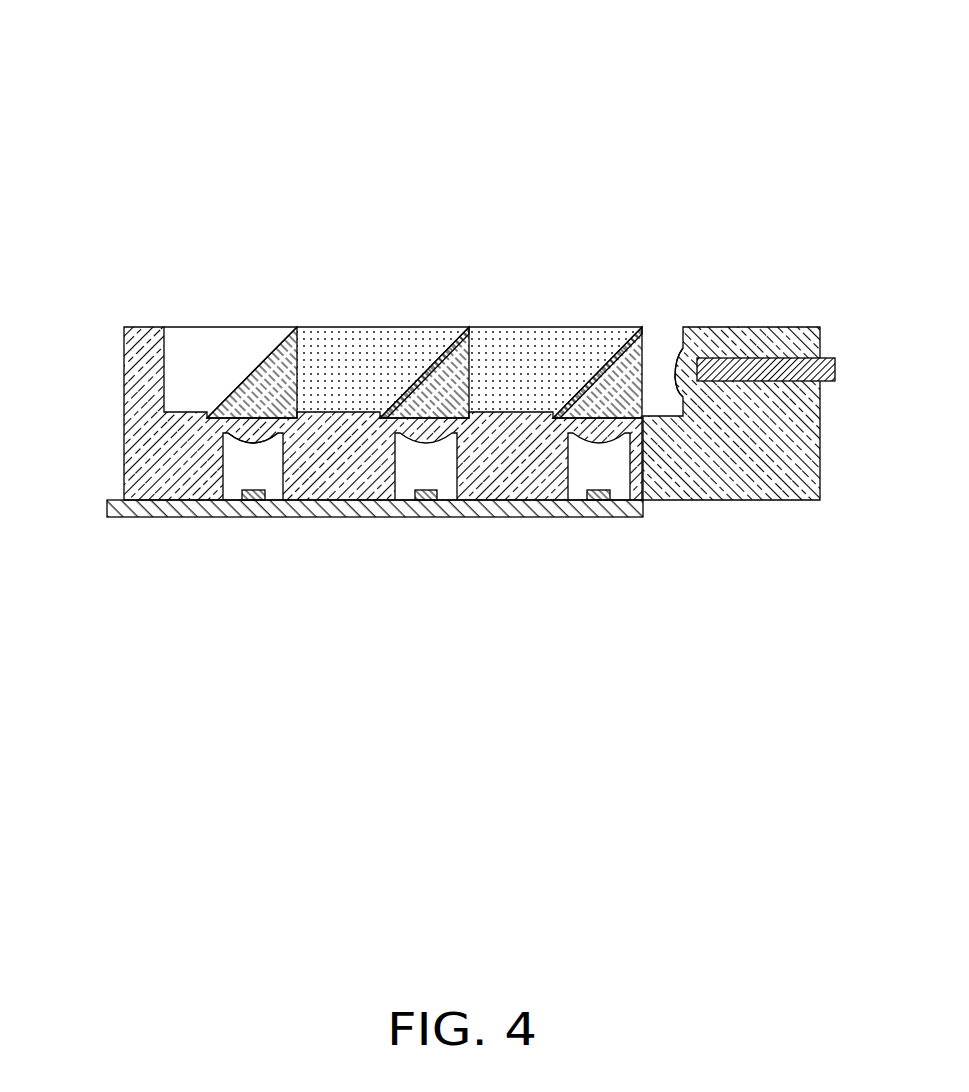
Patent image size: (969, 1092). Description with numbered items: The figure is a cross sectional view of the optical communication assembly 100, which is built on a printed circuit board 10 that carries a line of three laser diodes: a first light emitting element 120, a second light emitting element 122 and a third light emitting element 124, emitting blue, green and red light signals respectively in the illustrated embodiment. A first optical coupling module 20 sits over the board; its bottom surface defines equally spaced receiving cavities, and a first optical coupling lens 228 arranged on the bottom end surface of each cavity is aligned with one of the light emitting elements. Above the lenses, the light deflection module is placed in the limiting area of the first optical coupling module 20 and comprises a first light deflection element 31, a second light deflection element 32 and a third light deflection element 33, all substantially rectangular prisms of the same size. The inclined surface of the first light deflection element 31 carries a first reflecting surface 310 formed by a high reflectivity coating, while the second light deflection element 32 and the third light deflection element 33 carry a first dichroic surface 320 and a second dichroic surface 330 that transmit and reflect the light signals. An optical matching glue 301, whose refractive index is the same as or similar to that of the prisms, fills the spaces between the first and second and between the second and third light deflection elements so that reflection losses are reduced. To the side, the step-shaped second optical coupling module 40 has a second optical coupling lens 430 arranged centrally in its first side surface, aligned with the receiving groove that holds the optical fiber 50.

The optical communication assembly 100 is at (455, 54).
The printed circuit board 10 is at (110, 499).
The first optical coupling module 20 is at (103, 363).
The optical matching glue 301 is at (330, 358).
The first light deflection element 31 is at (272, 352).
The first reflecting surface 310 is at (232, 383).
The second light deflection element 32 is at (424, 372).
The first dichroic surface 320 is at (449, 345).
The third light deflection element 33 is at (590, 365).
The second dichroic surface 330 is at (620, 350).
The second optical coupling module 40 is at (800, 488).
The second optical coupling lens 430 is at (677, 362).
The optical fiber 50 is at (833, 358).
The first light emitting element 120 is at (250, 500).
The second light emitting element 122 is at (427, 498).
The third light emitting element 124 is at (598, 498).
The first optical coupling lens 228 is at (260, 441).